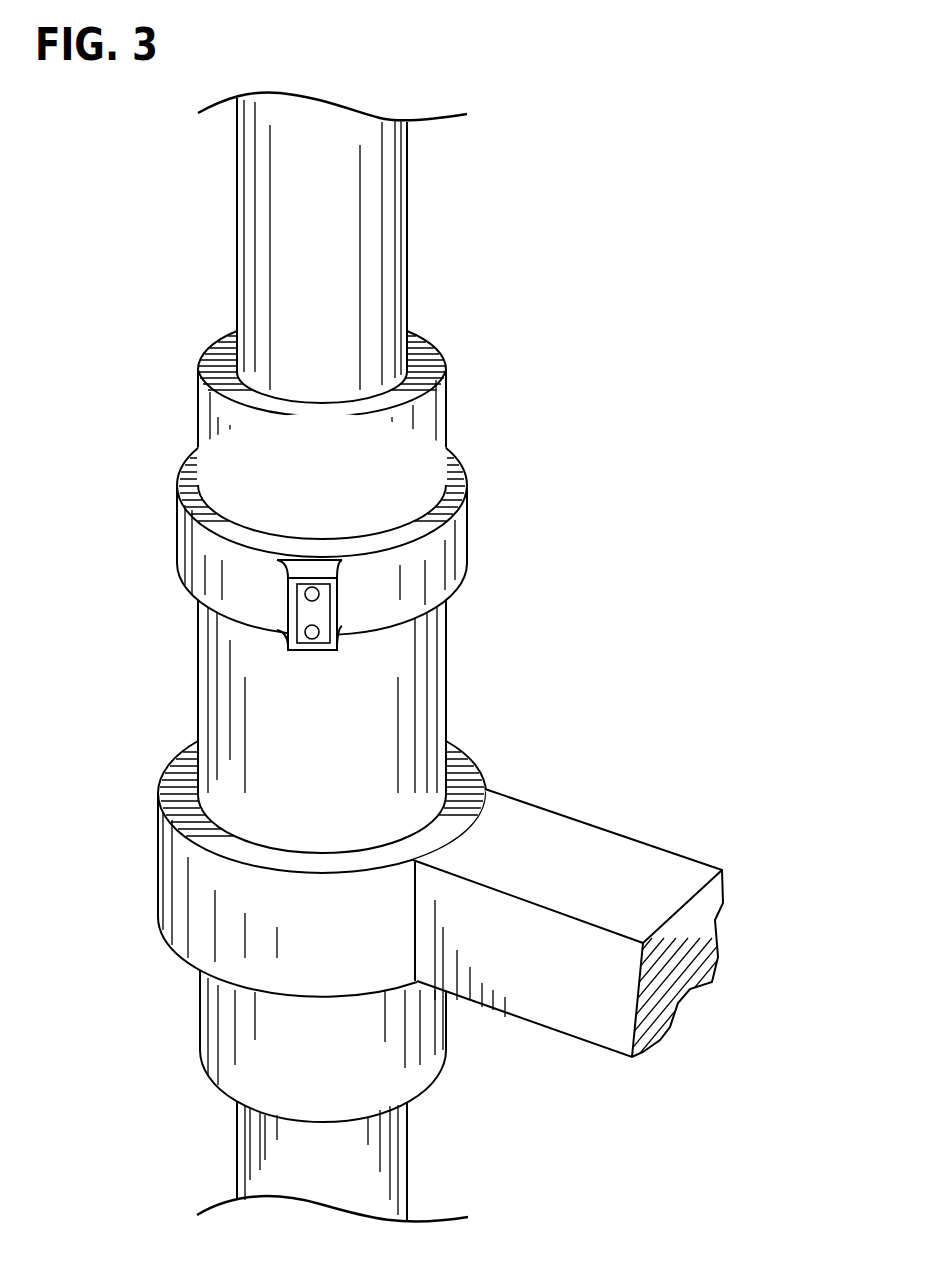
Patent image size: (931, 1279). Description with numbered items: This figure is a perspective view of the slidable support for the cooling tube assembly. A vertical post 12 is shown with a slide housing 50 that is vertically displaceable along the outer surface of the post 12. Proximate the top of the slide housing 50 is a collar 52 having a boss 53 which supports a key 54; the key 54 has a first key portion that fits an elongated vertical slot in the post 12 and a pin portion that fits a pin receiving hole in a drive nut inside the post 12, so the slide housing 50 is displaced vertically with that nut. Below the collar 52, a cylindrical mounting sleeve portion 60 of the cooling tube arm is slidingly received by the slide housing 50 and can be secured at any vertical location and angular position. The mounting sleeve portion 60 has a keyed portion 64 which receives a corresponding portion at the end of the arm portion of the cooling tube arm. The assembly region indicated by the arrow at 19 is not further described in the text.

The post 12 is at (380, 268).
The joint 19 is at (492, 780).
The slide housing 50 is at (223, 675).
The collar 52 is at (432, 553).
The boss 53 is at (340, 567).
The key 54 is at (310, 612).
The cylindrical mounting sleeve portion 60 is at (205, 880).
The keyed portion 64 is at (533, 980).